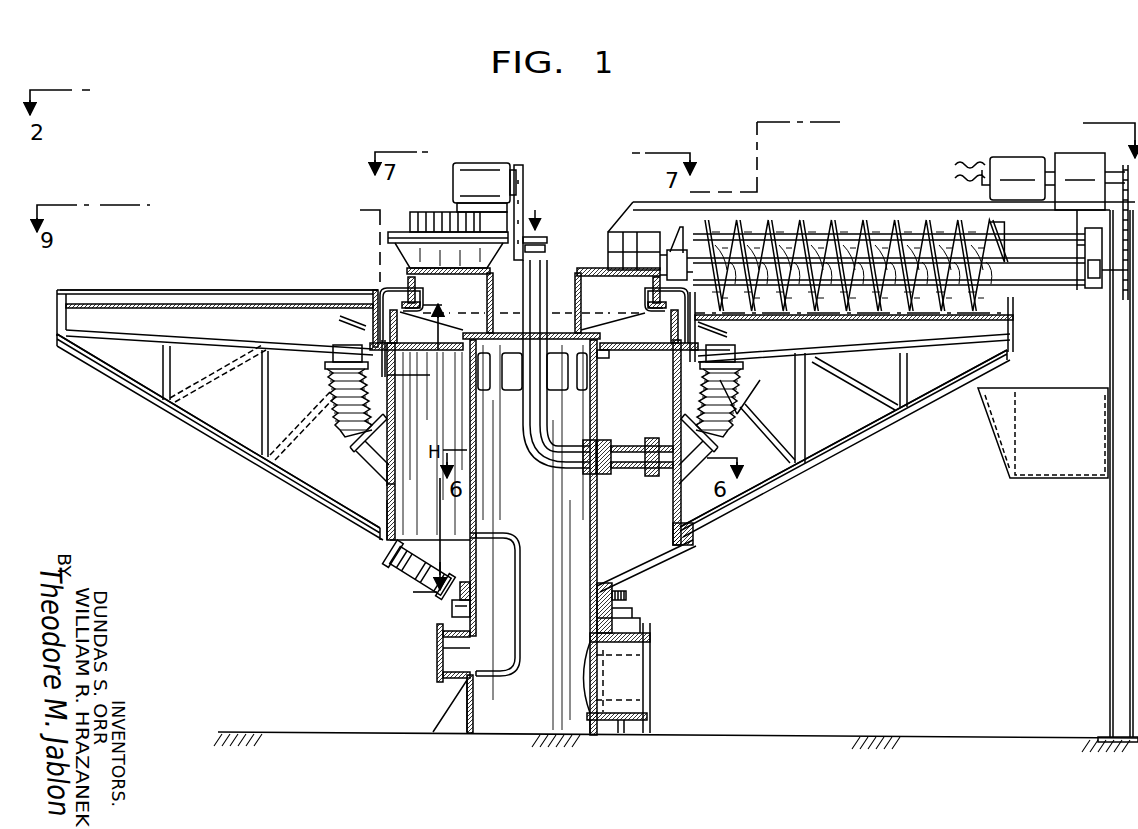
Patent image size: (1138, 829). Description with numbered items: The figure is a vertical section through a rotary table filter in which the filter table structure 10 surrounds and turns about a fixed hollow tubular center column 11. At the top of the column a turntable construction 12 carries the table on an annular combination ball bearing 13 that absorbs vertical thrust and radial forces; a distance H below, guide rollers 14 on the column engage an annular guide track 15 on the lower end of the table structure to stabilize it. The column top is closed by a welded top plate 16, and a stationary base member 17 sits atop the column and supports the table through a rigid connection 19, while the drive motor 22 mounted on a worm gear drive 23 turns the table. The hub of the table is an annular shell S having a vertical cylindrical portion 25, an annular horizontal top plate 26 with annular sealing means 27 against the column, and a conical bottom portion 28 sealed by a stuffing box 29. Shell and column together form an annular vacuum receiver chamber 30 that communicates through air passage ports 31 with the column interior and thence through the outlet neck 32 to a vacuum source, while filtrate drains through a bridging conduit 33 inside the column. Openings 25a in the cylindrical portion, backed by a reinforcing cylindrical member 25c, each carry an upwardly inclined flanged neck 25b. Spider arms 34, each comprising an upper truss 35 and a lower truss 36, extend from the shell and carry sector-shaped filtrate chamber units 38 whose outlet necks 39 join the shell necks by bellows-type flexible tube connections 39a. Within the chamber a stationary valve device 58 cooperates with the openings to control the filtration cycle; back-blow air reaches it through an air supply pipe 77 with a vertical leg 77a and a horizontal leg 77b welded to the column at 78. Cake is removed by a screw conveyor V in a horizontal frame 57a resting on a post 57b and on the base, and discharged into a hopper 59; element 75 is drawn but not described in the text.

The filter table structure 10 is at (180, 275).
The center column 11 is at (476, 494).
The turntable construction 12 is at (376, 288).
The annular combination ball bearing 13 is at (403, 287).
The guide rollers 14 is at (624, 594).
The annular guide track 15 is at (457, 604).
The top plate 16 is at (517, 333).
The stationary base member 17 is at (580, 270).
The rigid connection 19 is at (398, 320).
The drive motor 22 is at (485, 165).
The worm gear drive 23 is at (415, 228).
The vertical cylindrical portion 25 is at (388, 520).
The openings 25a is at (390, 452).
The flanged neck 25b is at (355, 450).
The reinforcing cylindrical member 25c is at (670, 473).
The annular horizontal top plate 26 is at (627, 347).
The annular sealing means 27 is at (600, 350).
The conical bottom portion 28 is at (670, 556).
The stuffing box 29 is at (594, 590).
The annular vacuum receiver chamber 30 is at (644, 442).
The air passage ports 31 is at (553, 377).
The outlet neck 32 is at (643, 660).
The bridging conduit 33 is at (520, 560).
The spider arms 34 is at (264, 483).
The upper truss 35 is at (192, 342).
The lower truss 36 is at (222, 437).
The sector-shaped filtrate chamber units 38 is at (100, 302).
The outlet neck 39 is at (335, 353).
The bellows-type flexible tube connection 39a is at (737, 414).
The horizontal frame 57a is at (653, 214).
The post 57b is at (1107, 506).
The stationary valve device 58 is at (623, 440).
The hopper 59 is at (1043, 433).
The nozzle 75 is at (402, 577).
The air supply pipe 77 is at (547, 258).
The vertical leg 77a is at (533, 303).
The horizontal leg 77b is at (563, 453).
The weld 78 is at (590, 467).
The screw conveyor V is at (780, 222).
The annular shell S is at (388, 488).